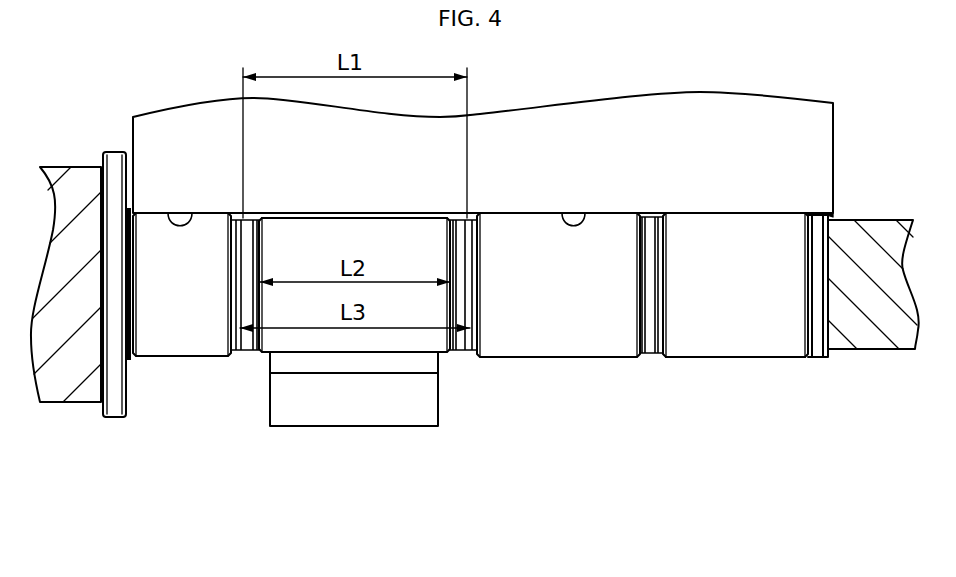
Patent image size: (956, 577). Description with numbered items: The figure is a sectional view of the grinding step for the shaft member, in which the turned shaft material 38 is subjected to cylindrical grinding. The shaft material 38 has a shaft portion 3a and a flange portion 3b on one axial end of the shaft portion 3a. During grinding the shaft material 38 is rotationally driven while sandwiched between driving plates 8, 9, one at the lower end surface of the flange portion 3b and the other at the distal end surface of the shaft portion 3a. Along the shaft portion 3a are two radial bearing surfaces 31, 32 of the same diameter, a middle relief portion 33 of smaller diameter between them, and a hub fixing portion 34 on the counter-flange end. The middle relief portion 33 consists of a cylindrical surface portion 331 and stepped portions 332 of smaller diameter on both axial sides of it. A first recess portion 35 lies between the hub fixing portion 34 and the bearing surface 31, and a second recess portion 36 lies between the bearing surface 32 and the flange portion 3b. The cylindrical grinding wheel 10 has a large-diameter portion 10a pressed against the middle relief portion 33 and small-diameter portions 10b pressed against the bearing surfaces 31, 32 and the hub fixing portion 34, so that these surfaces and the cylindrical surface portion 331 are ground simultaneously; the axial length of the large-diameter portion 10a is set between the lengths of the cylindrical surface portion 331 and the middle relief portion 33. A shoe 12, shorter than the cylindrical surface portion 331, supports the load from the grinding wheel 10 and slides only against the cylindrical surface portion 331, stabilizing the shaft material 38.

The shaft portion 3a is at (700, 360).
The flange portion 3b is at (115, 418).
The driving plate 8 is at (873, 220).
The driving plate 9 is at (78, 166).
The grinding wheel 10 is at (836, 122).
The large-diameter portion 10a is at (408, 219).
The small-diameter portions 10b is at (189, 213).
The shoe 12 is at (440, 402).
The radial bearing surface 31 is at (553, 358).
The radial bearing surface 32 is at (195, 358).
The middle relief portion 33 is at (442, 163).
The cylindrical surface portion 331 is at (350, 214).
The stepped portions 332 is at (250, 213).
The hub fixing portion 34 is at (748, 358).
The first recess portion 35 is at (650, 356).
The second recess portion 36 is at (133, 360).
The shaft material 38 is at (813, 369).